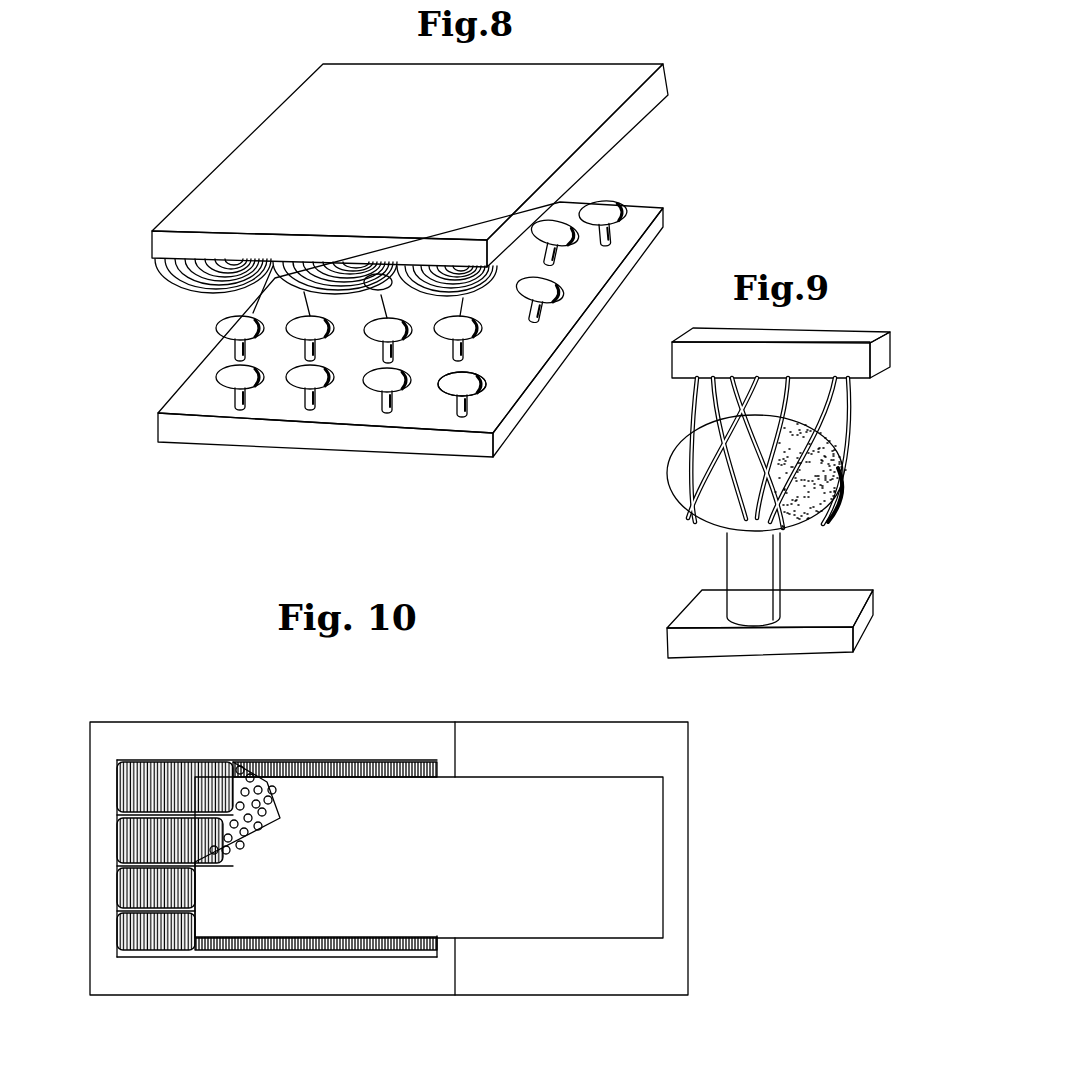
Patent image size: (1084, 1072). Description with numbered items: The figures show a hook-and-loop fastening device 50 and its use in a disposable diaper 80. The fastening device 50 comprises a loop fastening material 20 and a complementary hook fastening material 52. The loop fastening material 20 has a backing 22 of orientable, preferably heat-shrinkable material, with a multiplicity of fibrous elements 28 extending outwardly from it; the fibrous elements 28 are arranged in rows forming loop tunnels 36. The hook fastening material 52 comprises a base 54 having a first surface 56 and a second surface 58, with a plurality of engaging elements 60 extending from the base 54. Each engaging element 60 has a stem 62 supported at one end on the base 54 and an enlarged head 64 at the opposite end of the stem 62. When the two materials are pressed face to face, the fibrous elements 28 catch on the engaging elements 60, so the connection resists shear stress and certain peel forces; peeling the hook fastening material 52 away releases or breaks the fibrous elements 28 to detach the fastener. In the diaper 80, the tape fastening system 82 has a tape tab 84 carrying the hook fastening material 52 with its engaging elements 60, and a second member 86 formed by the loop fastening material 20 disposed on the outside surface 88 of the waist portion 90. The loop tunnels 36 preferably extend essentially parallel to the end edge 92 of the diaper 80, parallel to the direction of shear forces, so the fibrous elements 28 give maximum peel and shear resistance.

In FIG. 8, the loop fastening material 20 is at (356, 185).
In FIG. 9, the loop fastening material 20 is at (793, 400).
In FIG. 10, the loop fastening material 20 is at (234, 845).
In FIG. 8, the backing 22 is at (379, 153).
In FIG. 9, the backing 22 is at (862, 370).
In FIG. 8, the fibrous elements 28 is at (187, 285).
In FIG. 9, the fibrous elements 28 is at (846, 417).
In FIG. 10, the fibrous elements 28 is at (142, 846).
In FIG. 10, the loop tunnels 36 is at (128, 896).
In FIG. 8, the fastening device 50 is at (360, 350).
In FIG. 10, the fastening device 50 is at (249, 797).
In FIG. 8, the hook fastening material 52 is at (383, 351).
In FIG. 9, the hook fastening material 52 is at (795, 640).
In FIG. 10, the hook fastening material 52 is at (247, 840).
In FIG. 8, the base 54 is at (388, 437).
In FIG. 9, the base 54 is at (807, 645).
In FIG. 8, the first surface 56 is at (282, 406).
In FIG. 8, the second surface 58 is at (445, 458).
In FIG. 8, the engaging elements 60 is at (428, 334).
In FIG. 9, the engaging elements 60 is at (754, 520).
In FIG. 10, the engaging elements 60 is at (283, 815).
In FIG. 8, the stem 62 is at (477, 413).
In FIG. 9, the stem 62 is at (784, 553).
In FIG. 8, the enlarged head 64 is at (490, 380).
In FIG. 9, the enlarged head 64 is at (810, 456).
In FIG. 10, the diaper 80 is at (385, 826).
In FIG. 10, the tape fastening system 82 is at (418, 768).
In FIG. 10, the tape tab 84 is at (500, 858).
In FIG. 10, the second member 86 is at (136, 960).
In FIG. 10, the outside surface 88 is at (351, 751).
In FIG. 10, the waist portion 90 is at (272, 735).
In FIG. 10, the end edge 92 is at (312, 722).